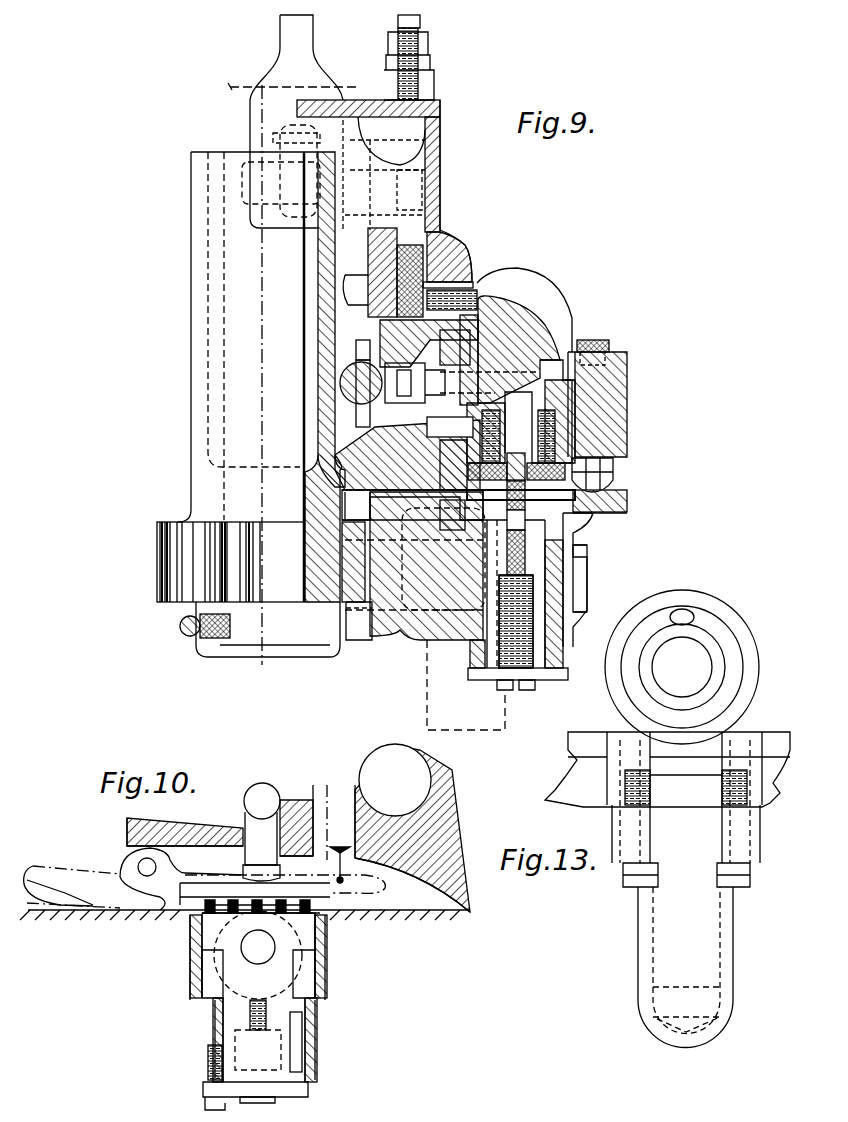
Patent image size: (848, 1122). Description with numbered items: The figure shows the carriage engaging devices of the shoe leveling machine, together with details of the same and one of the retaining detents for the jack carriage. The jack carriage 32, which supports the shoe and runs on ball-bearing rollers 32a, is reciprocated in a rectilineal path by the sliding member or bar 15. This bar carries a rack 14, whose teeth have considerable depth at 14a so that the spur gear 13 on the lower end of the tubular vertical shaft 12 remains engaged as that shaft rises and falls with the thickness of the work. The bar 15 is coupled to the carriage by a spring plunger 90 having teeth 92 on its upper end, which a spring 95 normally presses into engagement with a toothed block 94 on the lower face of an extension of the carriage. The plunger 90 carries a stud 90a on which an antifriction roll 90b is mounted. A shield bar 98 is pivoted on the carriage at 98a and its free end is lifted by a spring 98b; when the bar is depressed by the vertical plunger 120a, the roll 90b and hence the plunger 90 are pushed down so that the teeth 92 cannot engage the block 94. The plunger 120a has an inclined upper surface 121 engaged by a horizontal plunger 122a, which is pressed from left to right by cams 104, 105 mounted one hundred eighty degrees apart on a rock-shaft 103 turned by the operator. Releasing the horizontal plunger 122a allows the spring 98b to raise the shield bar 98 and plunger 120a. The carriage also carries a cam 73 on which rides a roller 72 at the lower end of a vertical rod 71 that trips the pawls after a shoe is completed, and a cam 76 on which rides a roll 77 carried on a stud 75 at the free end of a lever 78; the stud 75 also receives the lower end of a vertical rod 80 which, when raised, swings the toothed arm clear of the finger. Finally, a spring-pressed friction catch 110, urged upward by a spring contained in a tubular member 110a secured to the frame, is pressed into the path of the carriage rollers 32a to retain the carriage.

In FIG. 9, the tubular vertical shaft 12 is at (205, 385).
In FIG. 9, the spur gear 13 is at (176, 525).
In FIG. 9, the rack 14 is at (365, 640).
In FIG. 9, the rack teeth of considerable width 14a is at (346, 640).
In FIG. 9, the sliding member or bar 15 is at (452, 645).
In FIG. 10, the sliding member or bar 15 is at (320, 955).
In FIG. 9, the jack carriage 32 is at (478, 282).
In FIG. 10, the jack carriage 32 is at (127, 824).
In FIG. 13, the carriage rollers 32a is at (727, 622).
In FIG. 9, the vertical rod 71 is at (418, 22).
In FIG. 9, the roller 72 is at (443, 190).
In FIG. 9, the cam 73 is at (440, 234).
In FIG. 9, the stud 75 is at (243, 190).
In FIG. 9, the cam 76 is at (372, 255).
In FIG. 9, the roll 77 is at (442, 148).
In FIG. 9, the lever 78 is at (303, 215).
In FIG. 9, the vertical rod 80 is at (288, 58).
In FIG. 9, the spring plunger 90 is at (592, 542).
In FIG. 10, the spring plunger 90 is at (282, 1003).
In FIG. 9, the stud 90a is at (590, 560).
In FIG. 10, the stud 90a is at (258, 948).
In FIG. 9, the antifriction roll 90b is at (565, 520).
In FIG. 10, the antifriction roll 90b is at (225, 928).
In FIG. 9, the teeth 92 is at (627, 500).
In FIG. 10, the teeth 92 is at (312, 920).
In FIG. 9, the toothed block 94 is at (600, 457).
In FIG. 10, the toothed block 94 is at (368, 908).
In FIG. 9, the spring 95 is at (556, 642).
In FIG. 9, the shield bar 98 is at (560, 445).
In FIG. 10, the shield bar 98 is at (138, 898).
In FIG. 10, the pivot 98a is at (137, 870).
In FIG. 10, the spring 98b is at (357, 845).
In FIG. 9, the rock-shaft 103 is at (350, 397).
In FIG. 9, the cam 104 is at (352, 422).
In FIG. 9, the cam 105 is at (377, 352).
In FIG. 13, the friction catch 110 is at (752, 745).
In FIG. 13, the tubular member 110a is at (735, 947).
In FIG. 9, the vertical plunger 120a is at (618, 372).
In FIG. 10, the vertical plunger 120a is at (258, 835).
In FIG. 9, the inclined upper surface 121 is at (515, 410).
In FIG. 9, the horizontal plunger 122a is at (482, 378).
In FIG. 10, the horizontal plunger 122a is at (262, 796).